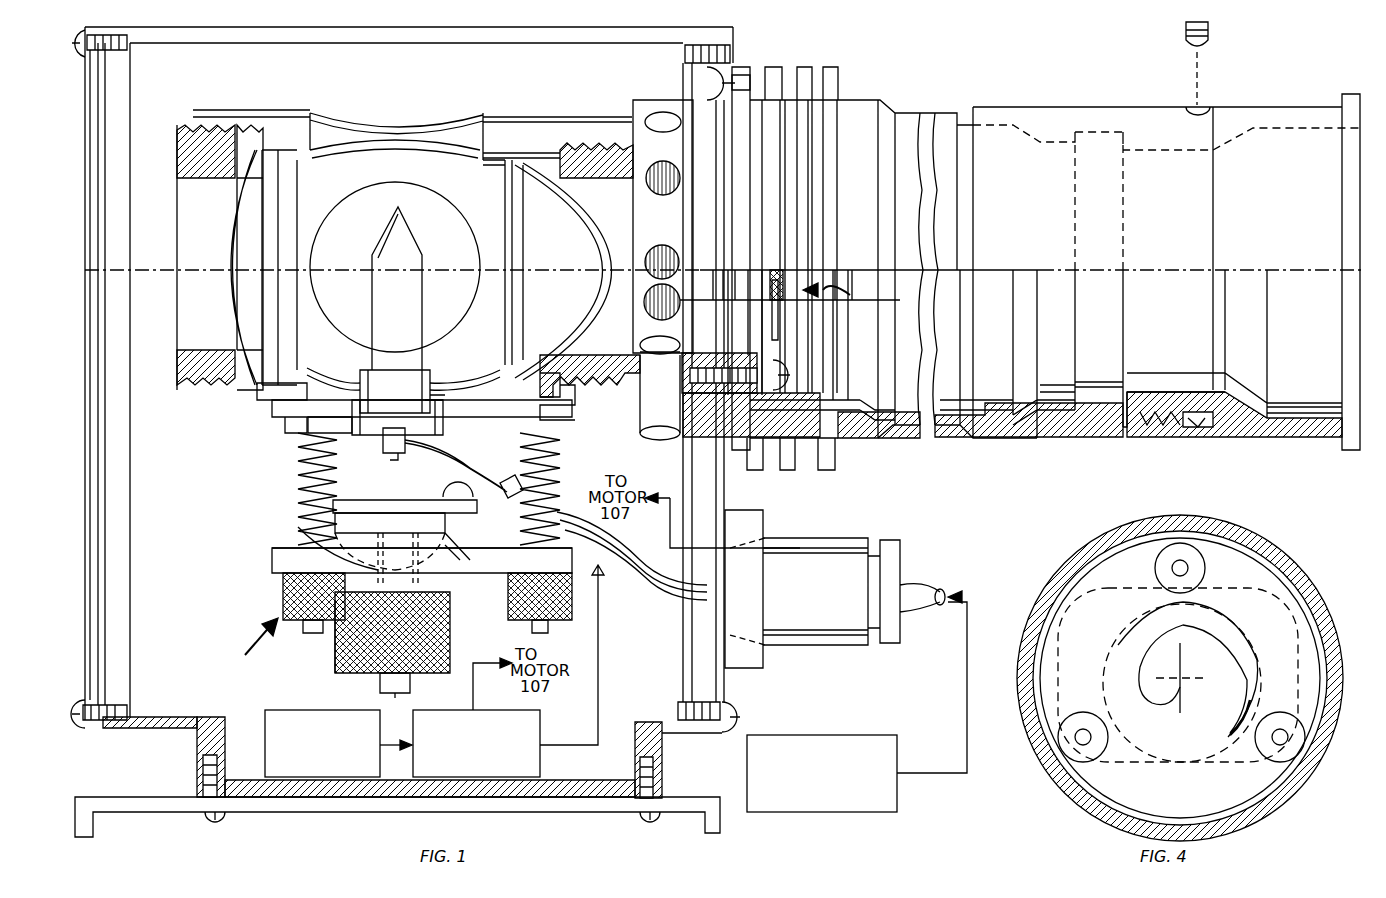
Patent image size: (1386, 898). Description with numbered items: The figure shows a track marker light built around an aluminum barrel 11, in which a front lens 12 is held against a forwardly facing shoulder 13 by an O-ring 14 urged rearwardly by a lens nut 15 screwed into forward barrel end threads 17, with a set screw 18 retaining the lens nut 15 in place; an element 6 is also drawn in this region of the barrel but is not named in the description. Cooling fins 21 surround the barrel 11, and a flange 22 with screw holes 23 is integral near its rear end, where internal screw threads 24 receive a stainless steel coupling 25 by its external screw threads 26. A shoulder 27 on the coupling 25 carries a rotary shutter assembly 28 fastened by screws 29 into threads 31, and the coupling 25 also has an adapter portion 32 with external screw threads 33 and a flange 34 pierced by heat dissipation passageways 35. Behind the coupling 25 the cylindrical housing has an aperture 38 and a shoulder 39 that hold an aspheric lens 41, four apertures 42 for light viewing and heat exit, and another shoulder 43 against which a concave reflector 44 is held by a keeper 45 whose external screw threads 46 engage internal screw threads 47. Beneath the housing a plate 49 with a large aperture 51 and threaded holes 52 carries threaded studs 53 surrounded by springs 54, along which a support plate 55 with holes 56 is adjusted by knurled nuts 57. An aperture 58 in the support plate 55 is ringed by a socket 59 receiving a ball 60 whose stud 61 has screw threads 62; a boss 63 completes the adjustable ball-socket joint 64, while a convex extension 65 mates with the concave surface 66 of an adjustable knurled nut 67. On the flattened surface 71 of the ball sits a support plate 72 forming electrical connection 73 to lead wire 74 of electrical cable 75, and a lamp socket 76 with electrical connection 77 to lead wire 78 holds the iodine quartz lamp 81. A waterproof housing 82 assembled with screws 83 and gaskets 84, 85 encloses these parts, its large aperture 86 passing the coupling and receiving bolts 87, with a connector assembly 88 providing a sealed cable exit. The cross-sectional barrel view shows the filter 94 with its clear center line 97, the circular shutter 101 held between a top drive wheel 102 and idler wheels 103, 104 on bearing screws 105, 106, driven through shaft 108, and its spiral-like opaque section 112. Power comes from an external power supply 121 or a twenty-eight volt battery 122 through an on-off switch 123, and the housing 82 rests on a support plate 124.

In FIG. 1, the ring 6 is at (1190, 405).
In FIG. 1, the barrel 11 is at (1040, 100).
In FIG. 4, the barrel 11 is at (1085, 545).
In FIG. 1, the front lens 12 is at (1130, 130).
In FIG. 1, the forwardly facing shoulder 13 is at (1078, 415).
In FIG. 1, the O-ring 14 is at (1150, 385).
In FIG. 1, the lens nut 15 is at (1300, 437).
In FIG. 1, the forward barrel end threads 17 is at (1180, 458).
In FIG. 1, the set screw 18 is at (1212, 30).
In FIG. 1, the cooling fins 21 is at (840, 75).
In FIG. 1, the flange 22 is at (770, 55).
In FIG. 1, the screw holes 23 is at (752, 75).
In FIG. 1, the internal screw threads 24 is at (688, 405).
In FIG. 1, the coupling 25 is at (615, 352).
In FIG. 1, the external screw threads 26 is at (780, 392).
In FIG. 1, the shoulder 27 is at (700, 345).
In FIG. 1, the rotary shutter assembly 28 is at (843, 302).
In FIG. 1, the screws 29 is at (790, 370).
In FIG. 1, the threads 31 is at (677, 345).
In FIG. 1, the adapter portion 32 is at (615, 178).
In FIG. 1, the external screw threads 33 is at (615, 400).
In FIG. 1, the flange 34 is at (632, 105).
In FIG. 1, the heat dissipation passageways 35 is at (660, 195).
In FIG. 1, the aperture 38 is at (487, 170).
In FIG. 1, the shoulder 39 is at (500, 360).
In FIG. 1, the aspheric lens 41 is at (512, 300).
In FIG. 1, the apertures 42 is at (460, 118).
In FIG. 1, the shoulder 43 is at (280, 365).
In FIG. 1, the reflector 44 is at (222, 222).
In FIG. 1, the keeper 45 is at (178, 160).
In FIG. 1, the external screw threads 46 is at (185, 110).
In FIG. 1, the internal screw threads 47 is at (255, 110).
In FIG. 1, the plate 49 is at (282, 432).
In FIG. 1, the large aperture 51 is at (318, 425).
In FIG. 1, the threaded holes 52 is at (560, 420).
In FIG. 1, the threaded studs 53 is at (290, 460).
In FIG. 1, the springs 54 is at (292, 487).
In FIG. 1, the support plate 55 is at (270, 540).
In FIG. 1, the holes 56 is at (280, 560).
In FIG. 1, the knurled nuts 57 is at (282, 595).
In FIG. 1, the aperture 58 is at (290, 518).
In FIG. 1, the socket 59 is at (430, 565).
In FIG. 1, the ball 60 is at (450, 522).
In FIG. 1, the stud 61 is at (397, 700).
In FIG. 1, the screw threads 62 is at (378, 682).
In FIG. 1, the boss 63 is at (480, 545).
In FIG. 1, the adjustable ball-socket joint 64 is at (252, 645).
In FIG. 1, the convex extension 65 is at (460, 595).
In FIG. 1, the concave surface 66 is at (450, 630).
In FIG. 1, the adjustable knurled nut 67 is at (330, 665).
In FIG. 1, the flattened surface 71 is at (358, 495).
In FIG. 1, the support plate 72 is at (395, 495).
In FIG. 1, the electrical connection 73 is at (462, 485).
In FIG. 1, the lead wire 74 is at (480, 488).
In FIG. 1, the electrical cable 75 is at (640, 590).
In FIG. 1, the lamp socket 76 is at (445, 402).
In FIG. 1, the electrical connection 77 is at (398, 420).
In FIG. 1, the lead wire 78 is at (445, 425).
In FIG. 1, the iodine quartz lamp 81 is at (375, 237).
In FIG. 1, the waterproof housing 82 is at (150, 730).
In FIG. 1, the screws 83 is at (70, 735).
In FIG. 1, the gasket 84 is at (133, 646).
In FIG. 1, the gasket 85 is at (230, 760).
In FIG. 1, the large aperture 86 is at (700, 95).
In FIG. 1, the bolts 87 is at (683, 53).
In FIG. 1, the connector assembly 88 is at (828, 527).
In FIG. 4, the filter 94 is at (1275, 600).
In FIG. 4, the center line 97 is at (1185, 665).
In FIG. 4, the circular shutter 101 is at (1192, 760).
In FIG. 4, the top drive wheel 102 is at (1208, 570).
In FIG. 4, the idler wheel 103 is at (1093, 760).
In FIG. 4, the idler wheel 104 is at (1268, 760).
In FIG. 4, the bearing screw 105 is at (1080, 728).
In FIG. 4, the bearing screw 106 is at (1278, 728).
In FIG. 4, the shaft 108 is at (1170, 565).
In FIG. 4, the spiral-like opaque section 112 is at (1245, 625).
In FIG. 1, the external power supply 121 is at (810, 730).
In FIG. 1, the battery 122 is at (265, 700).
In FIG. 1, the on-off switch 123 is at (548, 762).
In FIG. 1, the support plate 124 is at (685, 795).